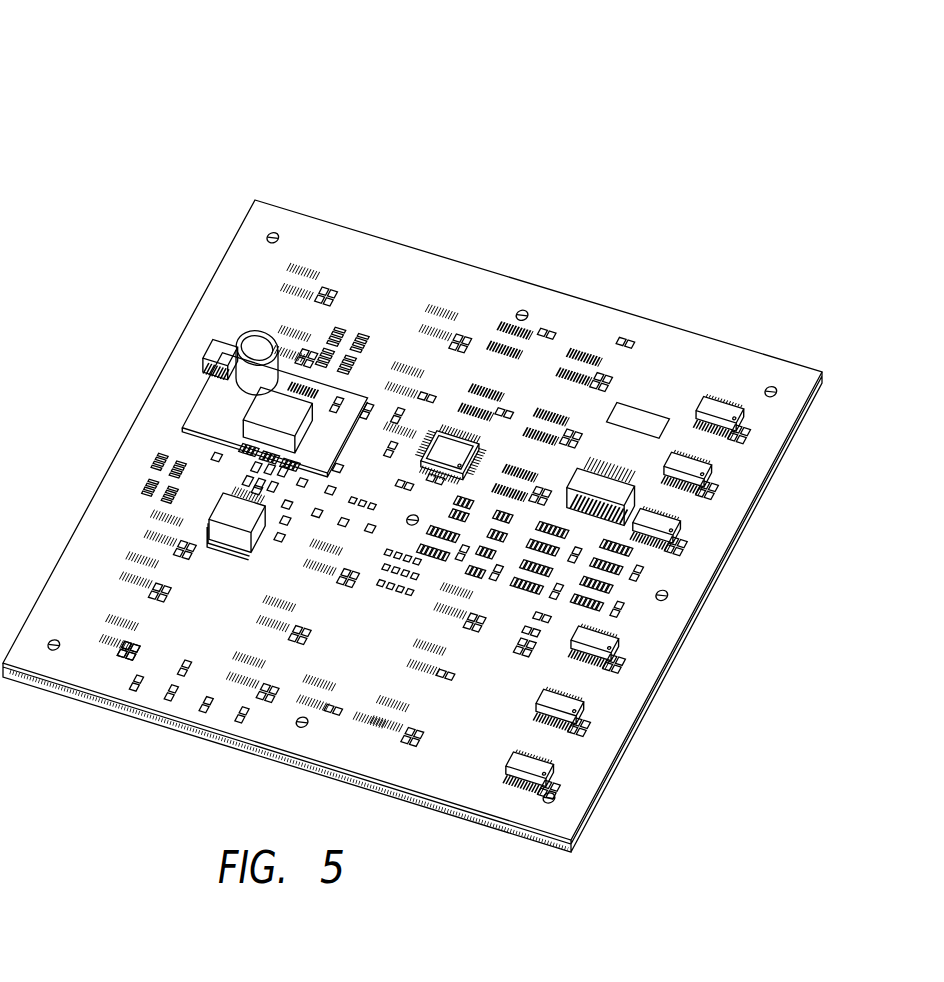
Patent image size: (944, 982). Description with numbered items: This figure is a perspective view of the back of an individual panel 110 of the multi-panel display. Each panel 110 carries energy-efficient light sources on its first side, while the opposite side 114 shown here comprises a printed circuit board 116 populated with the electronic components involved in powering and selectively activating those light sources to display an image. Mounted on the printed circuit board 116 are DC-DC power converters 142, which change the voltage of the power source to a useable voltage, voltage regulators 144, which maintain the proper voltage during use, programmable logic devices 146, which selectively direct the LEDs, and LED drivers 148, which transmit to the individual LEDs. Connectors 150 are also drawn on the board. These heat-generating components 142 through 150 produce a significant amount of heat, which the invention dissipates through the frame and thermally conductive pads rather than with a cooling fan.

The individual panel 110 is at (241, 110).
The opposite side 114 is at (494, 290).
The printed circuit board 116 is at (378, 638).
The DC-DC power converter 142 is at (256, 423).
The voltage regulator 144 is at (222, 504).
The programmable logic device 146 is at (457, 447).
The LED driver 148 is at (658, 522).
The connectors 150 is at (213, 352).